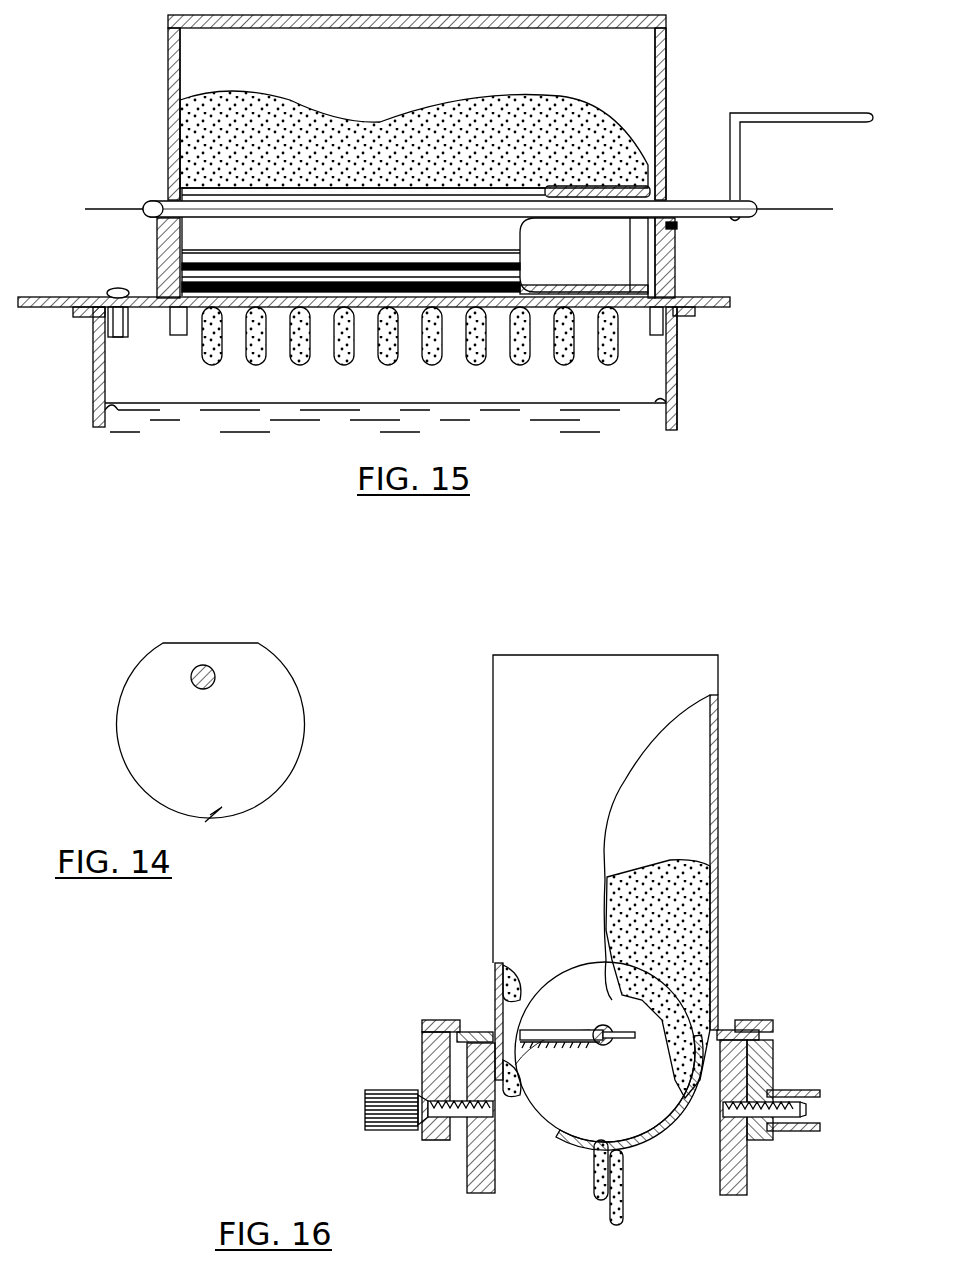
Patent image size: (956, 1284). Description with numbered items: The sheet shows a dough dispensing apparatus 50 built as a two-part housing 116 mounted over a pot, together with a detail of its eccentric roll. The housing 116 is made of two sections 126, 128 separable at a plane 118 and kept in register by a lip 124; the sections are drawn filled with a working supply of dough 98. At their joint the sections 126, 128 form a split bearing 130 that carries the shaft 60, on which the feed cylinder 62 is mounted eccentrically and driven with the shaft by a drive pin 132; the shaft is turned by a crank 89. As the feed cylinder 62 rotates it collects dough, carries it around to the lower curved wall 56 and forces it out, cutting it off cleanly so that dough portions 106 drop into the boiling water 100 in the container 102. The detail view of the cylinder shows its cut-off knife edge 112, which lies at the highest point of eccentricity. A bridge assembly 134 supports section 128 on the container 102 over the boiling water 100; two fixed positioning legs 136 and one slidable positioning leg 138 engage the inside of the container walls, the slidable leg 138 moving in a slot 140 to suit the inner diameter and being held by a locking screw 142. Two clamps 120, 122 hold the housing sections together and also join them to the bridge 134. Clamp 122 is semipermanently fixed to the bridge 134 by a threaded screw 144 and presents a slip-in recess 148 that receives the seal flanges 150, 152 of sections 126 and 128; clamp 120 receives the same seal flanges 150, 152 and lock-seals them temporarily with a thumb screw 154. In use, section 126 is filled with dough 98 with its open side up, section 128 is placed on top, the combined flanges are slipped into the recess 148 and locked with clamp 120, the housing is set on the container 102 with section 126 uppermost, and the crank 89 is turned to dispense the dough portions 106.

In FIG. 15, the apparatus 50 is at (170, 16).
In FIG. 16, the apparatus 50 is at (705, 663).
In FIG. 16, the lower curved wall 56 is at (650, 1138).
In FIG. 15, the shaft 60 is at (715, 205).
In FIG. 14, the shaft 60 is at (195, 671).
In FIG. 16, the shaft 60 is at (613, 1030).
In FIG. 15, the feed cylinder 62 is at (580, 190).
In FIG. 14, the feed cylinder 62 is at (277, 697).
In FIG. 15, the crank 89 is at (781, 113).
In FIG. 15, the dough 98 is at (222, 128).
In FIG. 15, the boiling water 100 is at (118, 428).
In FIG. 15, the container 102 is at (680, 345).
In FIG. 15, the dough portions 106 is at (298, 350).
In FIG. 16, the dough portions 106 is at (595, 1180).
In FIG. 14, the cut-off knife edge 112 is at (205, 820).
In FIG. 15, the housing 116 is at (667, 24).
In FIG. 16, the housing 116 is at (718, 716).
In FIG. 15, the plane 118 is at (126, 206).
In FIG. 16, the clamp 120 is at (430, 1082).
In FIG. 16, the clamp 122 is at (775, 1072).
In FIG. 16, the lip 124 is at (757, 1033).
In FIG. 15, the section 126 is at (192, 66).
In FIG. 16, the section 126 is at (683, 783).
In FIG. 15, the section 128 is at (660, 262).
In FIG. 16, the section 128 is at (565, 1135).
In FIG. 15, the split bearing 130 is at (162, 225).
In FIG. 16, the split bearing 130 is at (598, 1025).
In FIG. 15, the drive pin 132 is at (672, 224).
In FIG. 16, the drive pin 132 is at (618, 1033).
In FIG. 15, the bridge assembly 134 is at (36, 308).
In FIG. 16, the bridge assembly 134 is at (470, 1160).
In FIG. 15, the fixed positioning legs 136 is at (178, 330).
In FIG. 15, the slidable positioning leg 138 is at (115, 315).
In FIG. 15, the slot 140 is at (73, 300).
In FIG. 15, the locking screw 142 is at (124, 290).
In FIG. 16, the threaded screw 144 is at (806, 1112).
In FIG. 16, the slip-in recess 148 is at (757, 1045).
In FIG. 16, the seal flange 150 is at (485, 1032).
In FIG. 16, the seal flange 152 is at (462, 1038).
In FIG. 16, the thumb screw 154 is at (370, 1112).